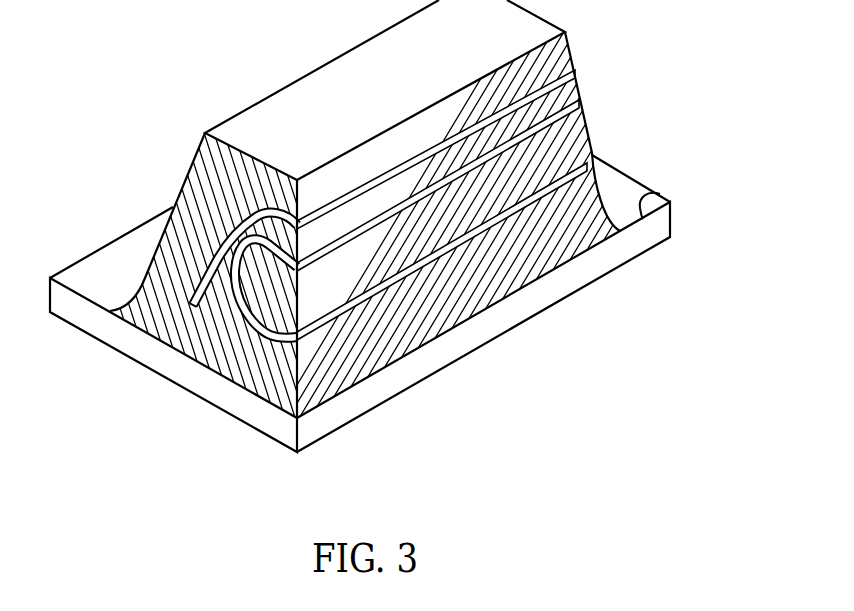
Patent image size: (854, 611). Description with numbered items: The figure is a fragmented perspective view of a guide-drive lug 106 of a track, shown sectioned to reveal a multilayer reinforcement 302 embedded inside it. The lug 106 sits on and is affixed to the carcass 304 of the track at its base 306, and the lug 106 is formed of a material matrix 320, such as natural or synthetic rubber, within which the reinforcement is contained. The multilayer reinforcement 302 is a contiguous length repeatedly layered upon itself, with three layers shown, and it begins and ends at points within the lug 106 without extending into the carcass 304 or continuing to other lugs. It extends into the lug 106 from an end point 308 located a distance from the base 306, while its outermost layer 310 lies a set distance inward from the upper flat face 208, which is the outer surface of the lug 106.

The guide-drive lug 106 is at (133, 77).
The flat face 208 is at (332, 78).
The multilayer reinforcement 302 is at (575, 72).
The carcass 304 is at (233, 400).
The base 306 is at (650, 193).
The end point 308 is at (192, 305).
The outermost layer 310 is at (507, 102).
The material matrix 320 is at (189, 206).